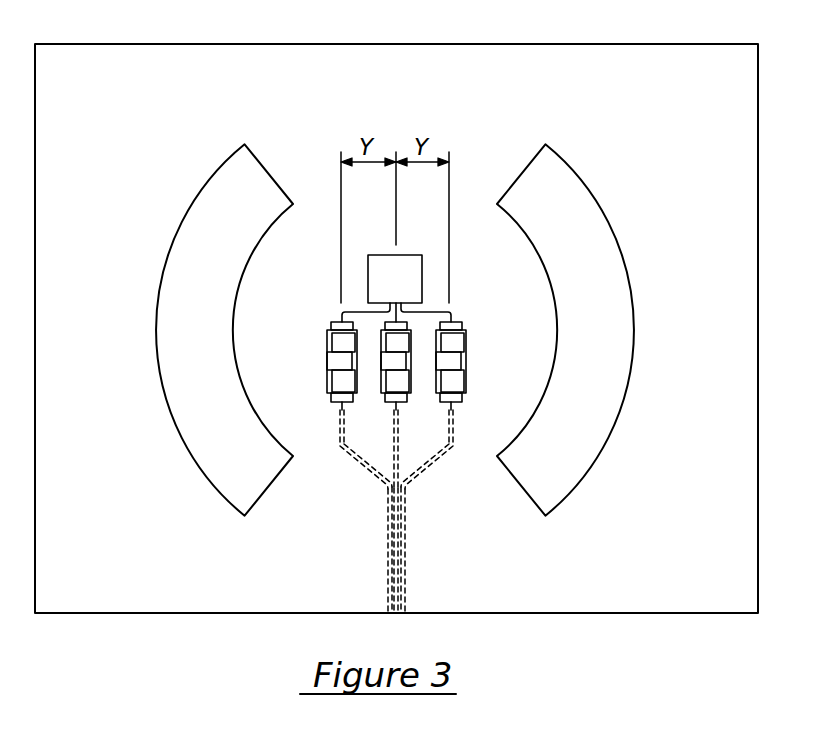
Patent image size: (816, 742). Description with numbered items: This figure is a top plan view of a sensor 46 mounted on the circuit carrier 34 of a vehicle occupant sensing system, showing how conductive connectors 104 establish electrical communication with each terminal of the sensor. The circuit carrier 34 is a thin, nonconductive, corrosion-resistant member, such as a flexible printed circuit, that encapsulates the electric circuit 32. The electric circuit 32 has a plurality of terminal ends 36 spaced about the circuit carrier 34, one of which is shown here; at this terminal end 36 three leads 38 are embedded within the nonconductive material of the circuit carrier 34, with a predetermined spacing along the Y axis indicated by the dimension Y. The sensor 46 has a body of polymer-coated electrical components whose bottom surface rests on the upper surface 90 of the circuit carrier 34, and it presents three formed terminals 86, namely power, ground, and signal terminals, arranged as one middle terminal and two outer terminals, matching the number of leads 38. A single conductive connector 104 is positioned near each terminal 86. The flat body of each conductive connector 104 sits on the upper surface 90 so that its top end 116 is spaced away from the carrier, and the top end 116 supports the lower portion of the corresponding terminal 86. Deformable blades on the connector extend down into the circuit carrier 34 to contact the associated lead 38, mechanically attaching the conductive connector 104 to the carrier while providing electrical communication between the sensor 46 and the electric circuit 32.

The electric circuit 32 is at (400, 567).
The circuit carrier 34 is at (651, 582).
The terminal end 36 is at (352, 475).
The leads 38 is at (390, 412).
The sensor 46 is at (382, 250).
The formed terminals 86 is at (340, 314).
The upper surface 90 is at (453, 378).
The conductive connector 104 is at (320, 337).
The top end 116 is at (330, 382).